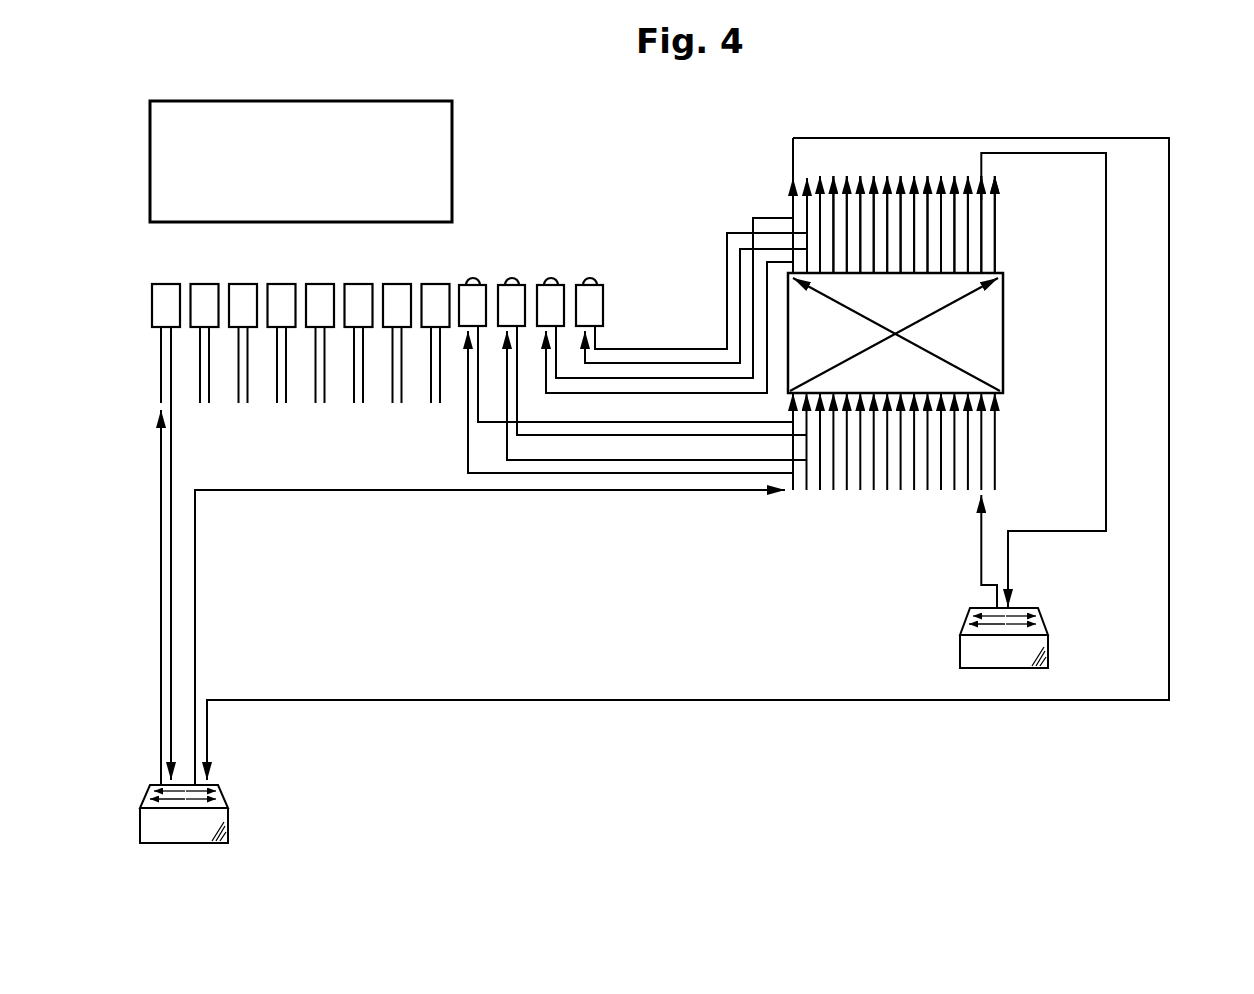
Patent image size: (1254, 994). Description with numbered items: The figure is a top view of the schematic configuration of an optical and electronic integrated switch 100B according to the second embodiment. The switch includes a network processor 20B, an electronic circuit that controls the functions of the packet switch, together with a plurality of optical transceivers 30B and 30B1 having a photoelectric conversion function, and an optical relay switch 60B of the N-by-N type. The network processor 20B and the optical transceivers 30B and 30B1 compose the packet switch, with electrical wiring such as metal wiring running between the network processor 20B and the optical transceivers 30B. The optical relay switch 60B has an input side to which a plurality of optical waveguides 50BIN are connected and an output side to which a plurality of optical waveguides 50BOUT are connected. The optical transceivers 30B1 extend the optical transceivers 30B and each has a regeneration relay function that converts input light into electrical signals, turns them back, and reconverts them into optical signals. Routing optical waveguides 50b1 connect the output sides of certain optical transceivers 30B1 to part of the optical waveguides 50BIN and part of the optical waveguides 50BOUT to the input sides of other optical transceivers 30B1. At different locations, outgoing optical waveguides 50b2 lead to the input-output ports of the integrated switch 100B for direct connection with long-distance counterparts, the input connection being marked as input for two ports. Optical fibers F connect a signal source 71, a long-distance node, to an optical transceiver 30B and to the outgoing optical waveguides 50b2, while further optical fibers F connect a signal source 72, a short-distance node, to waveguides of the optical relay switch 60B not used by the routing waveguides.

The optical and electronic integrated switch 100B is at (1165, 120).
The network processor 20B is at (452, 166).
The optical transceivers 30B is at (450, 273).
The optical transceivers 30B1 is at (460, 273).
The routing optical waveguides 50b1 is at (672, 358).
The outgoing optical waveguides 50b2 is at (768, 240).
The optical waveguides 50BOUT is at (1009, 268).
The optical waveguides 50BIN is at (1009, 417).
The optical relay switch 60B is at (1003, 333).
The signal source 71 is at (228, 813).
The signal source 72 is at (1048, 639).
The optical fibers F is at (171, 462).